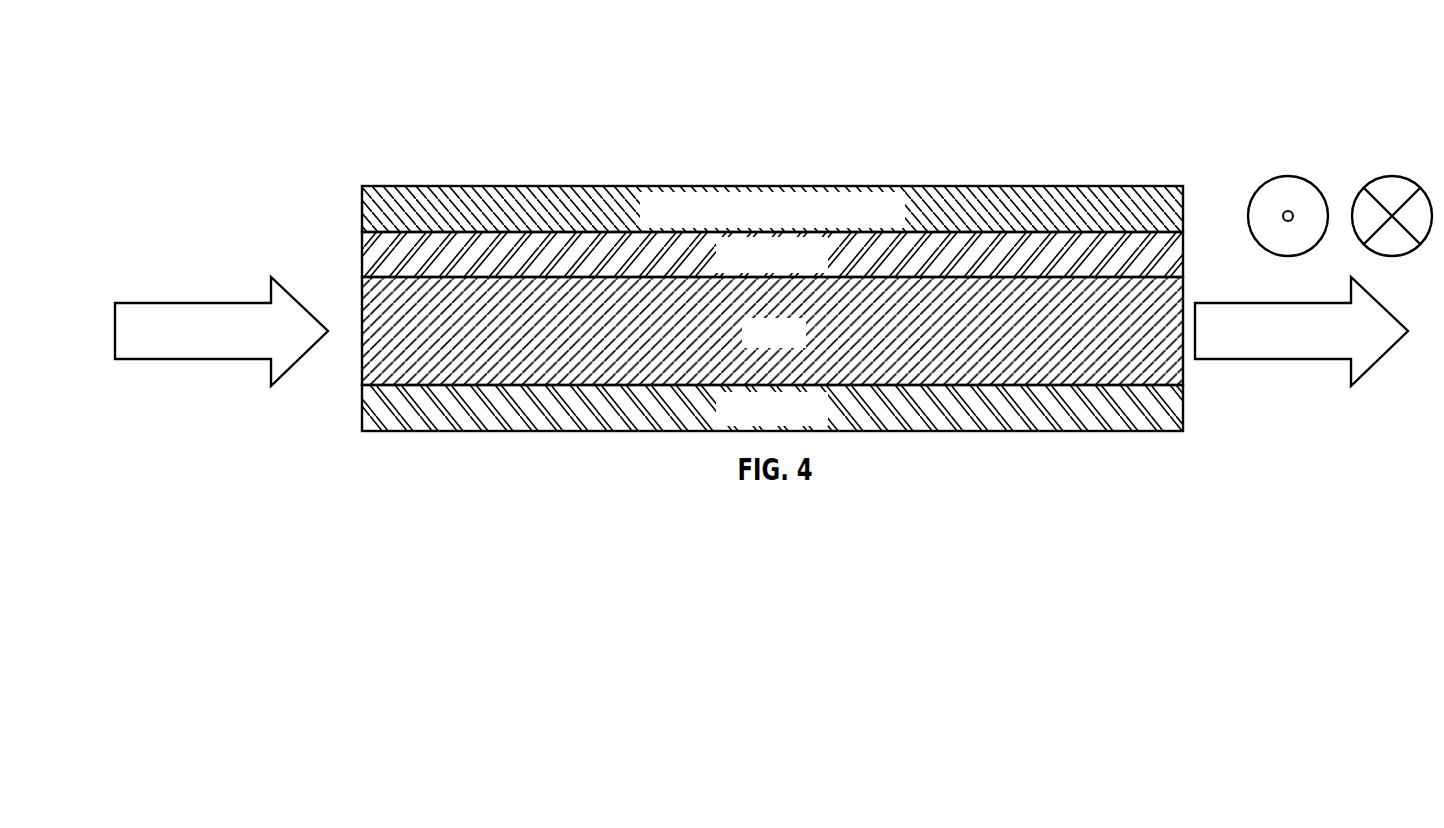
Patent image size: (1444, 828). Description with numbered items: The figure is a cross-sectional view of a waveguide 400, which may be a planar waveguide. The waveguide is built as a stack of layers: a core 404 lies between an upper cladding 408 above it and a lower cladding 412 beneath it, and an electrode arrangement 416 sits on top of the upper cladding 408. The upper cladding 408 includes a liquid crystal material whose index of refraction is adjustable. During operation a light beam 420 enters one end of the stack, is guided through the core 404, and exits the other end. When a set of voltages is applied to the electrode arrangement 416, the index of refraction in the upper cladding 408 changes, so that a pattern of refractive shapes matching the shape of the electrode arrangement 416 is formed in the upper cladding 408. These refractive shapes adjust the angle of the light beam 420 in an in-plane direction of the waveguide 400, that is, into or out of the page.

The waveguide 400 is at (696, 244).
The core 404 is at (362, 303).
The upper cladding 408 is at (362, 250).
The lower cladding 412 is at (363, 405).
The electrode arrangement 416 is at (362, 205).
The light beam 420 is at (192, 360).